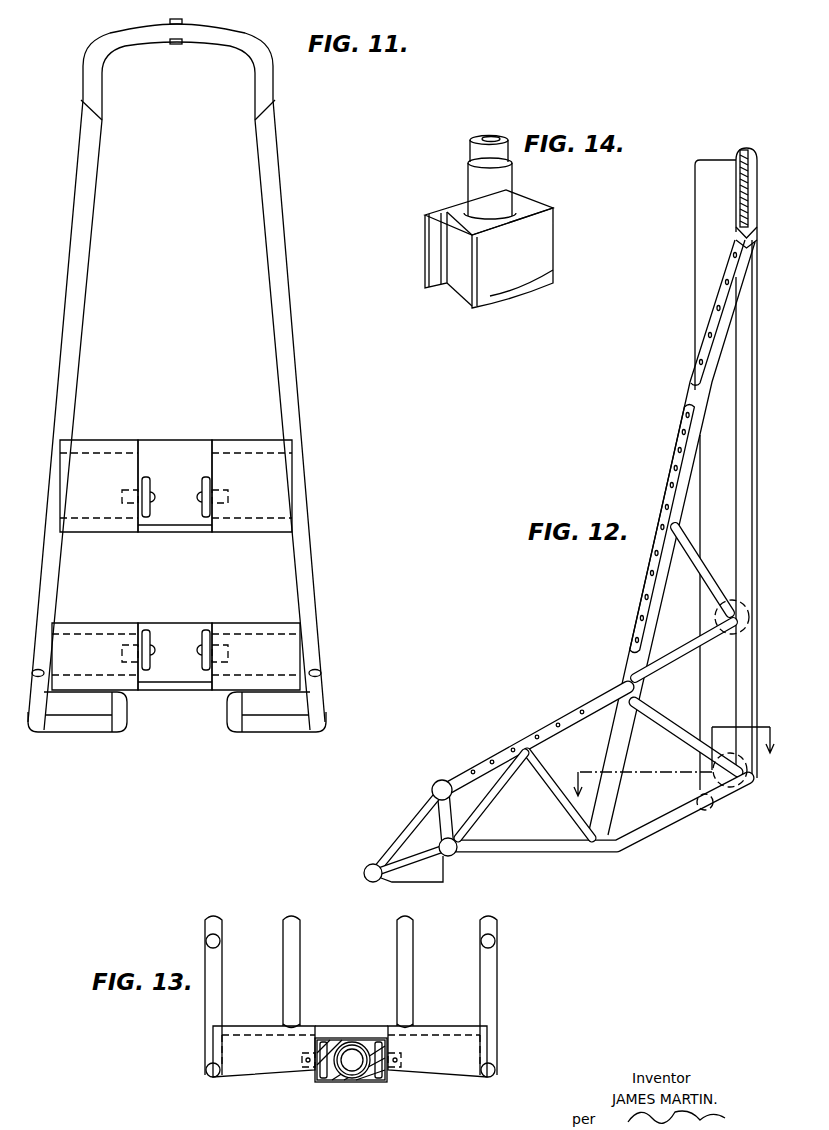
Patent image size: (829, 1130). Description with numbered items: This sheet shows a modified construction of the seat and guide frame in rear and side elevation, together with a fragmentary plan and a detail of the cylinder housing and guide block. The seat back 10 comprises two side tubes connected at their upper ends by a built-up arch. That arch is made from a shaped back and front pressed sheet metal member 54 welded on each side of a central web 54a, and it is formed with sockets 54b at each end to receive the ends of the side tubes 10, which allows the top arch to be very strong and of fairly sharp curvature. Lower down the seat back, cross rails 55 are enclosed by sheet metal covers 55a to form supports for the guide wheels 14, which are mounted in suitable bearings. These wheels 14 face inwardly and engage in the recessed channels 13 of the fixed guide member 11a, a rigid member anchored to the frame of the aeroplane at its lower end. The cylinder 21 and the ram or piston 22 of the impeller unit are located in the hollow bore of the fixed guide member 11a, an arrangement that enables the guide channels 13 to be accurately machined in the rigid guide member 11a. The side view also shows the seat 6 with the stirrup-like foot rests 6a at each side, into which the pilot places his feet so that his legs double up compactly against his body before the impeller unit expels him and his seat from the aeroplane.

In FIG. 12, the seat 6 is at (558, 845).
In FIG. 11, the stirrup-like foot rests 6a is at (80, 732).
In FIG. 12, the stirrup-like foot rests 6a is at (367, 868).
In FIG. 11, the side tubes 10 is at (76, 350).
In FIG. 12, the side tubes 10 is at (743, 325).
In FIG. 13, the side tubes 10 is at (206, 1069).
In FIG. 14, the fixed guide member 11a is at (515, 288).
In FIG. 13, the fixed guide member 11a is at (328, 1083).
In FIG. 14, the recessed channels 13 is at (533, 208).
In FIG. 12, the recessed channels 13 is at (672, 749).
In FIG. 11, the guide wheels 14 is at (202, 481).
In FIG. 12, the guide wheels 14 is at (716, 614).
In FIG. 13, the guide wheels 14 is at (316, 1076).
In FIG. 14, the cylinder 21 is at (468, 181).
In FIG. 14, the ram or piston 22 is at (473, 142).
In FIG. 11, the pressed sheet metal member 54 is at (148, 43).
In FIG. 12, the pressed sheet metal member 54 is at (757, 187).
In FIG. 12, the central web 54a is at (742, 152).
In FIG. 11, the sockets 54b is at (90, 66).
In FIG. 12, the sockets 54b is at (737, 234).
In FIG. 11, the cross rails 55 is at (172, 440).
In FIG. 13, the cross rails 55 is at (357, 1026).
In FIG. 11, the sheet metal covers 55a is at (78, 642).
In FIG. 13, the sheet metal covers 55a is at (254, 1036).